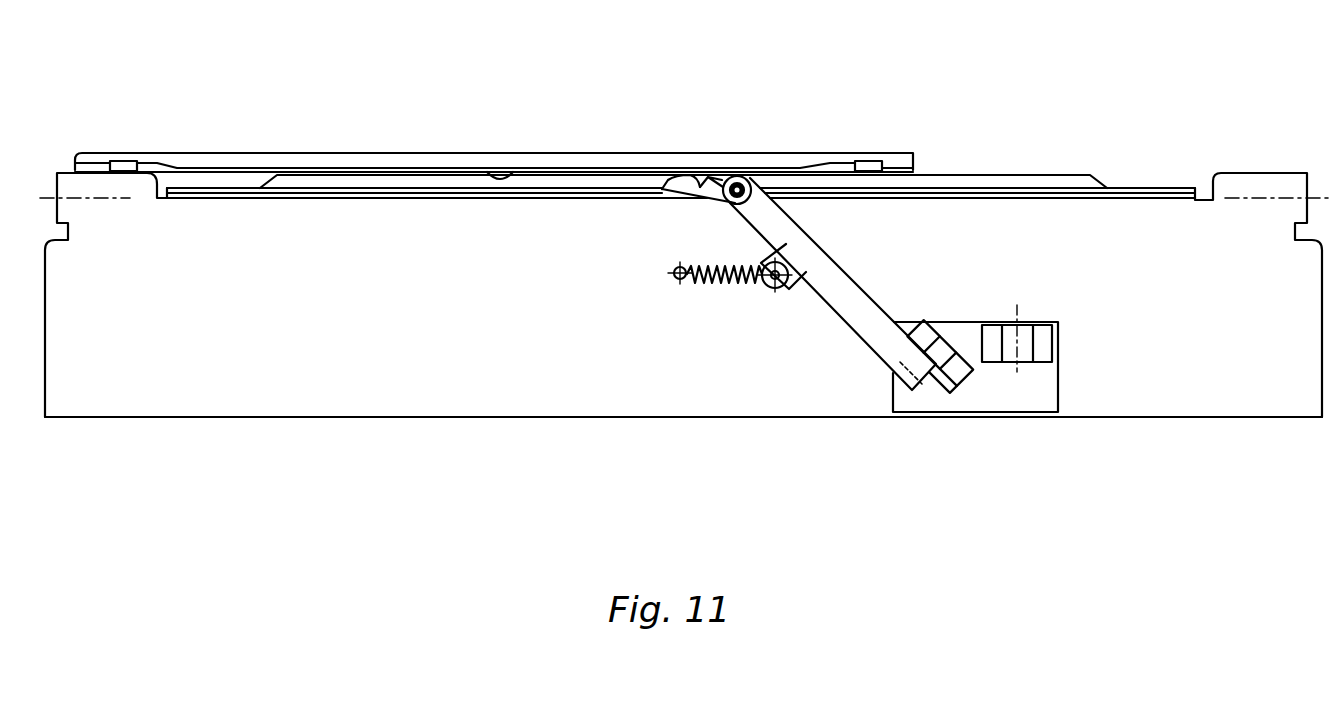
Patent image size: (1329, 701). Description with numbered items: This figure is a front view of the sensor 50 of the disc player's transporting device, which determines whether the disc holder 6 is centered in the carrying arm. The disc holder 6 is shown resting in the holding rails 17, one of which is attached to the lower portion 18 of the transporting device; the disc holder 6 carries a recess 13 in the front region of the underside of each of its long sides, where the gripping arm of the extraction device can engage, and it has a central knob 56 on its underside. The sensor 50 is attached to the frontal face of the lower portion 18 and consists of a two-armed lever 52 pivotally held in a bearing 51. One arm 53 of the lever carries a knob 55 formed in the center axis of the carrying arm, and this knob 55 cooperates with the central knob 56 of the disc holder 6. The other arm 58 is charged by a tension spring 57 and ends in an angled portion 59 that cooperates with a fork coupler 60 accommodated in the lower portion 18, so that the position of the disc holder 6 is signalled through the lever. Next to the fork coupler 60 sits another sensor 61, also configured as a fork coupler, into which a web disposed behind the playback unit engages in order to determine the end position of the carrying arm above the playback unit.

The disc holder 6 is at (428, 160).
The recess 13 is at (126, 161).
The holding rail 17 is at (1003, 177).
The lower portion 18 is at (385, 420).
The sensor 50 is at (771, 343).
The bearing 51 is at (748, 175).
The two-armed lever 52 is at (722, 207).
The arm 53 is at (693, 175).
The knob 55 is at (665, 178).
The central knob 56 is at (500, 182).
The tension spring 57 is at (697, 286).
The arm 58 is at (860, 303).
The angled portion 59 is at (925, 385).
The fork coupler 60 is at (955, 380).
The sensor 61 is at (1057, 348).